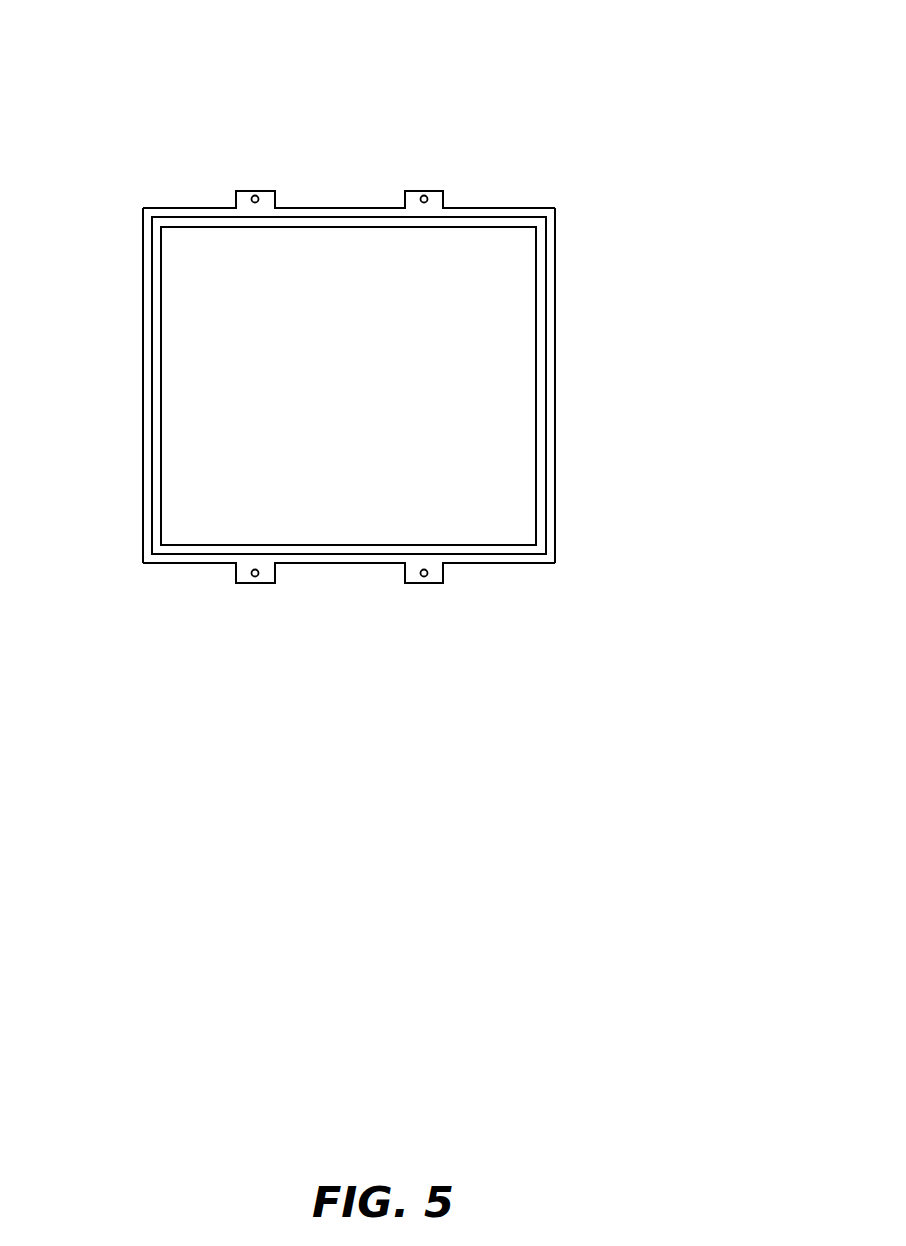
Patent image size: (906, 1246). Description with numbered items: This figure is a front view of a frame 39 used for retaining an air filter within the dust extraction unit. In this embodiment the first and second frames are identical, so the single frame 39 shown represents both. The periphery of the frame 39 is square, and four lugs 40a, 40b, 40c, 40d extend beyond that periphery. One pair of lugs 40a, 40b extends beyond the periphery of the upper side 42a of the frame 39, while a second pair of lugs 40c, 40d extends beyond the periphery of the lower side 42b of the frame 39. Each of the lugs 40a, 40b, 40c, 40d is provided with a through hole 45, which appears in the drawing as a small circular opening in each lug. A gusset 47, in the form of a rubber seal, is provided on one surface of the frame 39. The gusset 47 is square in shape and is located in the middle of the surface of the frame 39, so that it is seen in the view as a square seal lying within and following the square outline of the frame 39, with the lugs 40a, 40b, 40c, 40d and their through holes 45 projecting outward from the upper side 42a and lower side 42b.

The frame 39 is at (462, 63).
The gusset 47 is at (153, 312).
The upper side 42a is at (522, 207).
The lower side 42b is at (525, 567).
The lug 40a is at (248, 191).
The lug 40b is at (417, 188).
The lug 40c is at (243, 585).
The lug 40d is at (412, 585).
The through hole 45 is at (257, 203).